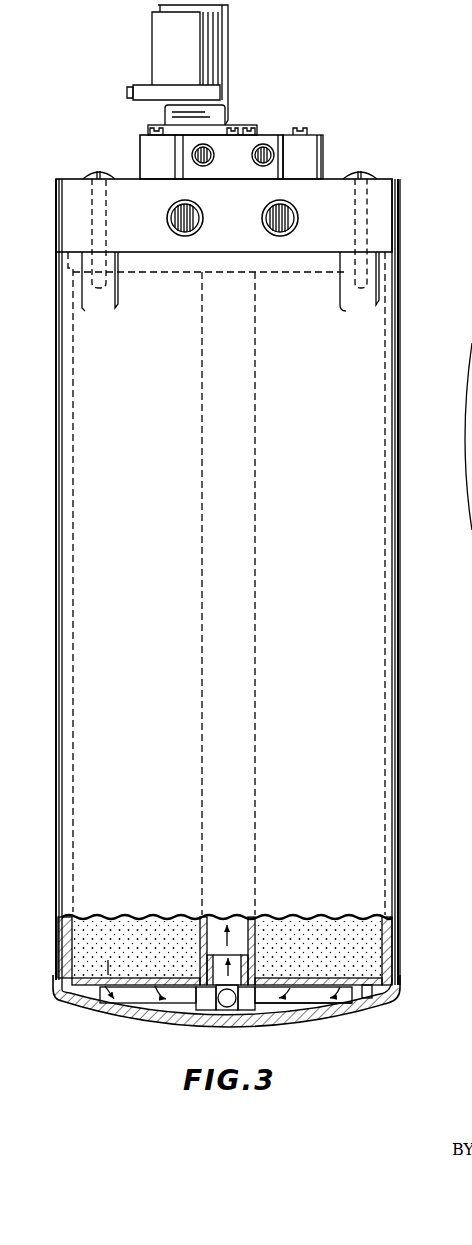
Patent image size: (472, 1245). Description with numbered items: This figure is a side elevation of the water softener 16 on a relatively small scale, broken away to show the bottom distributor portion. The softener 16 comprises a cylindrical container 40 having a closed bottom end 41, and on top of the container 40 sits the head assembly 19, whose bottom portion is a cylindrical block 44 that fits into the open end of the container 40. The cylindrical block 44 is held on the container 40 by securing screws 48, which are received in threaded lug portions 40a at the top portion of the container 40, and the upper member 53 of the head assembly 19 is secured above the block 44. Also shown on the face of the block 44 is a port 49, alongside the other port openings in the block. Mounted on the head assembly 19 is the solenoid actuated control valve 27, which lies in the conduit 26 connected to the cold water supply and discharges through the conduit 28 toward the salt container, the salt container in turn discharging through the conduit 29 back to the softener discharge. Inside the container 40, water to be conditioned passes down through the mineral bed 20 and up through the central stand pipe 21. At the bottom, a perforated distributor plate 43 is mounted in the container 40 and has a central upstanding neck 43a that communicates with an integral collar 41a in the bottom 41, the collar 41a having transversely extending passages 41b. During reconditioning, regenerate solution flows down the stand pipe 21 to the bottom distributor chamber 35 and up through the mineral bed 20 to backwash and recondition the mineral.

The water softener 16 is at (403, 313).
The head assembly 19 is at (75, 190).
The mineral bed 20 is at (370, 939).
The stand pipe 21 is at (199, 937).
The conduit 26 is at (167, 218).
The solenoid actuated control valve 27 is at (163, 48).
The conduit 28 is at (252, 155).
The conduit 29 is at (192, 155).
The bottom distributor chamber 35 is at (310, 1000).
The cylindrical container 40 is at (400, 636).
The threaded lug portions 40a is at (92, 284).
The closed bottom end 41 is at (370, 1010).
The integral collar 41a is at (188, 978).
The transversely extending passages 41b is at (204, 1012).
The perforated distributor plate 43 is at (326, 985).
The central upstanding neck 43a is at (246, 966).
The cylindrical block 44 is at (66, 218).
The securing screws 48 is at (98, 171).
The outlet port 49 is at (298, 218).
The upper member 53 is at (325, 152).